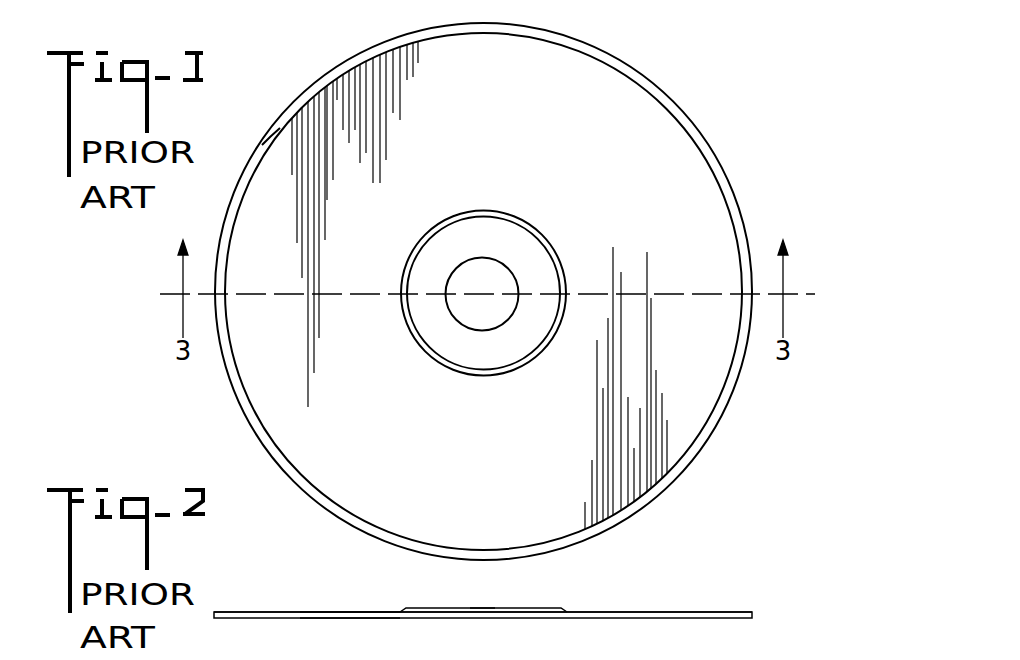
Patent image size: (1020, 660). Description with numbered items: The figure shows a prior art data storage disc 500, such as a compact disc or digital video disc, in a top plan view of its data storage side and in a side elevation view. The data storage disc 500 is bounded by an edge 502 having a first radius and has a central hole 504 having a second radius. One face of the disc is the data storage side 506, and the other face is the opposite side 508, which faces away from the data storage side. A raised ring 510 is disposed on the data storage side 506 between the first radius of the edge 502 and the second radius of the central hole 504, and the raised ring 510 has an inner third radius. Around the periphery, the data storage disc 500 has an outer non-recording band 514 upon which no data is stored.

In FIG. 1, the data storage disc 500 is at (737, 85).
In FIG. 2, the data storage disc 500 is at (739, 583).
In FIG. 1, the edge 502 is at (263, 446).
In FIG. 2, the edge 502 is at (213, 610).
In FIG. 1, the central hole 504 is at (473, 313).
In FIG. 2, the central hole 504 is at (464, 634).
In FIG. 1, the data storage side 506 is at (455, 177).
In FIG. 2, the data storage side 506 is at (333, 611).
In FIG. 2, the opposite side 508 is at (338, 619).
In FIG. 1, the raised ring 510 is at (562, 256).
In FIG. 2, the raised ring 510 is at (560, 609).
In FIG. 1, the outer non-recording band 514 is at (272, 134).